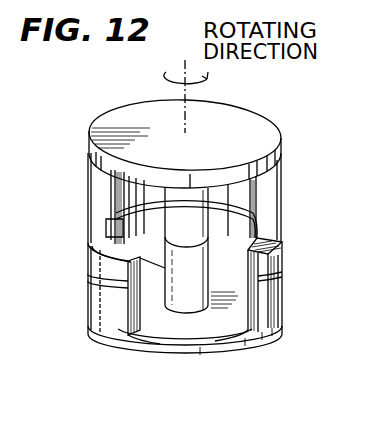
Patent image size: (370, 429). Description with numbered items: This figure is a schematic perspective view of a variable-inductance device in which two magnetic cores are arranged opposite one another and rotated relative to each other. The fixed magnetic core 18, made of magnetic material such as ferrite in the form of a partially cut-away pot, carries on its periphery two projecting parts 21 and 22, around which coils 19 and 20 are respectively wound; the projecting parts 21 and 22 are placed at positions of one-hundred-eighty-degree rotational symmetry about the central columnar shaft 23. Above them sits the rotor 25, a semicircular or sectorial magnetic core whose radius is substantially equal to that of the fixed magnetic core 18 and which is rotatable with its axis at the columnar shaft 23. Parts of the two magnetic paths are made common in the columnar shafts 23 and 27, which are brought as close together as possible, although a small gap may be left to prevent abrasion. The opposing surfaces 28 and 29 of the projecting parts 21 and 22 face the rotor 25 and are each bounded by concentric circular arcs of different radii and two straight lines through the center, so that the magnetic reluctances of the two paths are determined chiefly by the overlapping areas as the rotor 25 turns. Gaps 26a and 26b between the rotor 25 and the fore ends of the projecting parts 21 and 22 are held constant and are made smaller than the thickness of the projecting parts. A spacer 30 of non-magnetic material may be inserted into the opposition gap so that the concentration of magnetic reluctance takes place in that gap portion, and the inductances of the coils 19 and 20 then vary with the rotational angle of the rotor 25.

The fixed magnetic core 18 is at (152, 345).
The coil 19 is at (90, 293).
The coil 20 is at (267, 264).
The projecting part 21 is at (97, 305).
The projecting part 22 is at (283, 295).
The columnar shaft 23 is at (199, 305).
The rotor 25 is at (256, 123).
The gap 26a is at (112, 208).
The gap 26b is at (242, 215).
The columnar shaft 27 is at (196, 222).
The opposing surface 28 is at (101, 238).
The opposing surface 29 is at (260, 241).
The spacer 30 is at (108, 232).